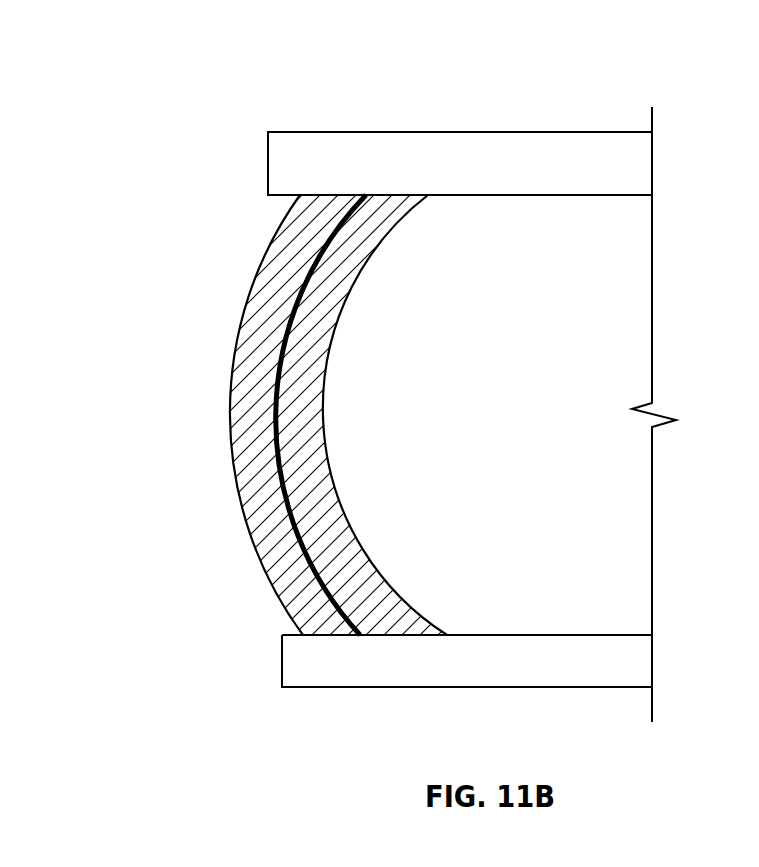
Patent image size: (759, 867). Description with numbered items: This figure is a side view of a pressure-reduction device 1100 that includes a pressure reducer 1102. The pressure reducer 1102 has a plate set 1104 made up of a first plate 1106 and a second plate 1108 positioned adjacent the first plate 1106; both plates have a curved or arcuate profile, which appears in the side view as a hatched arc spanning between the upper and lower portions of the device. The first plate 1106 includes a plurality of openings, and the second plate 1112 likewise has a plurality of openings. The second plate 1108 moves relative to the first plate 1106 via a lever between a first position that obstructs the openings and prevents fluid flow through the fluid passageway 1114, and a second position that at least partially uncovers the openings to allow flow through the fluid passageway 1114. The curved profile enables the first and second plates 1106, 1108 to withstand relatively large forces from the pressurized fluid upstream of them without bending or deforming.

The pressure-reduction device 1100 is at (216, 52).
The pressure reducer 1102 is at (272, 701).
The plate set 1104 is at (392, 705).
The first plate 1106 is at (258, 276).
The second plate 1108 is at (317, 415).
The second plate 1112 is at (330, 520).
The fluid passageway 1114 is at (578, 634).